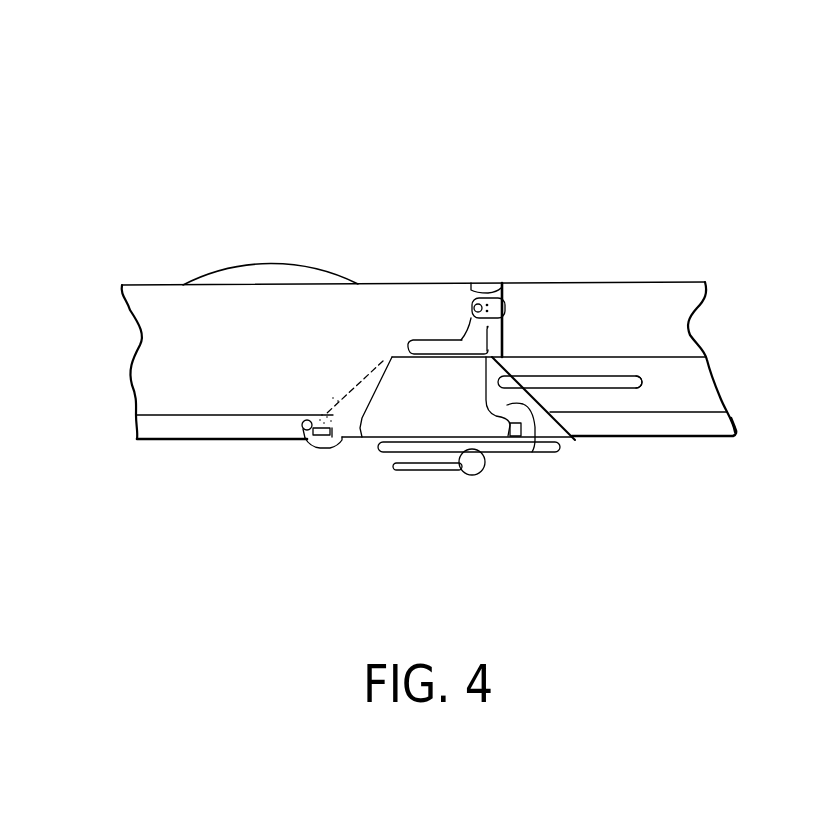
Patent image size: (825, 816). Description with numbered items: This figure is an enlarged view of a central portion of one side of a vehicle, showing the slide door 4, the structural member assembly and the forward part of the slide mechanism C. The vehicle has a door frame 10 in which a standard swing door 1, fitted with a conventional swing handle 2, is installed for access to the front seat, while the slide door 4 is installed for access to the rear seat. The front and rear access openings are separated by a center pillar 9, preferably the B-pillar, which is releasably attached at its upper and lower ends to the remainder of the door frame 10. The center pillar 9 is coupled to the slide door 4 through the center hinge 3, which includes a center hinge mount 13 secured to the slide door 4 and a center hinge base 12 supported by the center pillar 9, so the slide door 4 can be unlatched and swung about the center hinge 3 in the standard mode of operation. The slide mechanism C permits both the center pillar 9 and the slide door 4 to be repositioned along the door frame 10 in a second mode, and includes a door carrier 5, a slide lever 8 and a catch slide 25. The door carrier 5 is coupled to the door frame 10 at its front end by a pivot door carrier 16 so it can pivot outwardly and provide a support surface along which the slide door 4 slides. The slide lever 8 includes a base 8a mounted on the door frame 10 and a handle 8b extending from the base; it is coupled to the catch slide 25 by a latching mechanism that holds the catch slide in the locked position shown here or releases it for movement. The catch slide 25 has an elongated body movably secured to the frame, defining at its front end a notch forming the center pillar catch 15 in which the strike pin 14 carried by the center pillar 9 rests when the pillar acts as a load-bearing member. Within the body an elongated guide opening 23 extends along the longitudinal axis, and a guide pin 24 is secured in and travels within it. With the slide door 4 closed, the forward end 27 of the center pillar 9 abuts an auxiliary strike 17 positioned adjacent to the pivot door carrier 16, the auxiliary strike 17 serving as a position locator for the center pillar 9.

The swing door 1 is at (148, 285).
The swing handle 2 is at (308, 265).
The center hinge 3 is at (493, 282).
The slide door 4 is at (645, 281).
The door carrier 5 is at (343, 388).
The slide lever 8 is at (460, 544).
The base 8a is at (468, 475).
The handle 8b is at (427, 470).
The center pillar 9 is at (573, 440).
The door frame 10 is at (183, 442).
The center hinge base 12 is at (470, 318).
The center hinge mount 13 is at (508, 283).
The strike pin 14 is at (527, 445).
The center pillar catch 15 is at (512, 453).
The pivot door carrier 16 is at (332, 440).
The auxiliary strike 17 is at (300, 442).
The guide opening 23 is at (590, 377).
The guide pin 24 is at (642, 383).
The catch slide 25 is at (667, 365).
The forward end 27 is at (313, 450).
The slide mechanism C is at (655, 562).